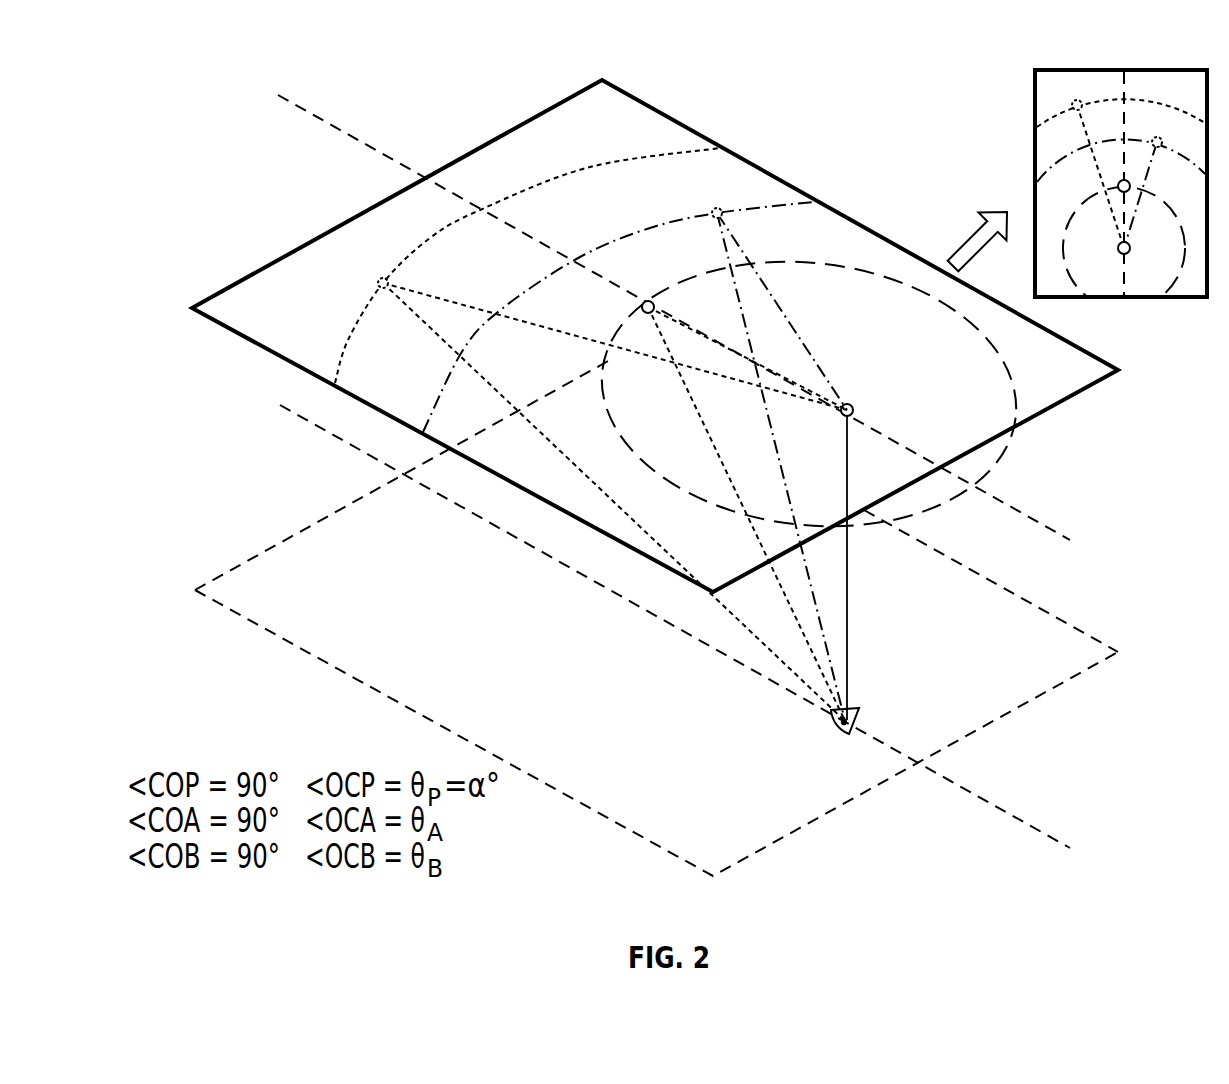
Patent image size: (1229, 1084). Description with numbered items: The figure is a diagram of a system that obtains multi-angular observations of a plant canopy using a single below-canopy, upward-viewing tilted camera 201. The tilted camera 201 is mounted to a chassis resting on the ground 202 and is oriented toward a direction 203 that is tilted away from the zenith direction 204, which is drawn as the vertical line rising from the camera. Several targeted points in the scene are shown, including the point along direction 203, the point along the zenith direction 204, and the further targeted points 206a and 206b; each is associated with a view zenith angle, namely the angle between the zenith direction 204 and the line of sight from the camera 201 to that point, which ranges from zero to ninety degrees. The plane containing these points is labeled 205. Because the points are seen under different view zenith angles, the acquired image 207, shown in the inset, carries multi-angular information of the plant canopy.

The below-canopy tilted camera 201 is at (858, 707).
The ground 202 is at (1068, 688).
The direction 203 is at (643, 309).
The zenith direction 204 is at (851, 405).
The display plane 205 is at (1072, 396).
The targeted point 206a is at (385, 277).
The targeted point 206b is at (718, 207).
The acquired image 207 is at (1124, 298).